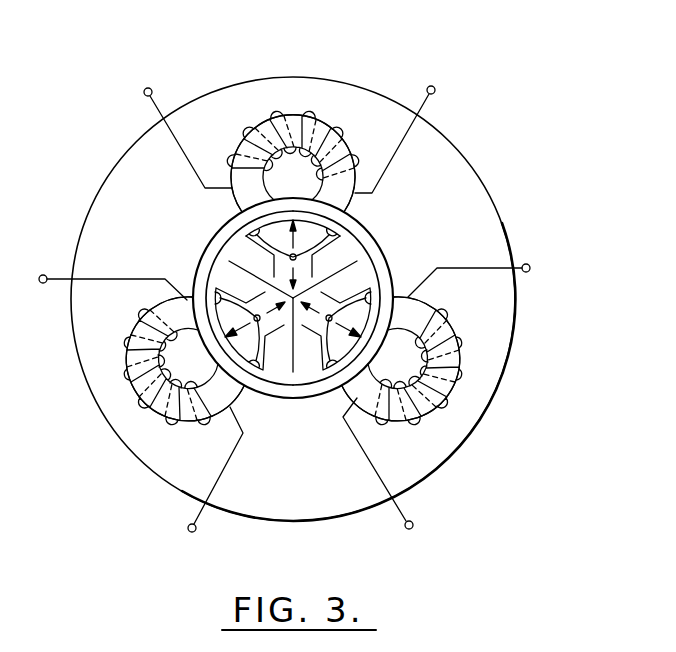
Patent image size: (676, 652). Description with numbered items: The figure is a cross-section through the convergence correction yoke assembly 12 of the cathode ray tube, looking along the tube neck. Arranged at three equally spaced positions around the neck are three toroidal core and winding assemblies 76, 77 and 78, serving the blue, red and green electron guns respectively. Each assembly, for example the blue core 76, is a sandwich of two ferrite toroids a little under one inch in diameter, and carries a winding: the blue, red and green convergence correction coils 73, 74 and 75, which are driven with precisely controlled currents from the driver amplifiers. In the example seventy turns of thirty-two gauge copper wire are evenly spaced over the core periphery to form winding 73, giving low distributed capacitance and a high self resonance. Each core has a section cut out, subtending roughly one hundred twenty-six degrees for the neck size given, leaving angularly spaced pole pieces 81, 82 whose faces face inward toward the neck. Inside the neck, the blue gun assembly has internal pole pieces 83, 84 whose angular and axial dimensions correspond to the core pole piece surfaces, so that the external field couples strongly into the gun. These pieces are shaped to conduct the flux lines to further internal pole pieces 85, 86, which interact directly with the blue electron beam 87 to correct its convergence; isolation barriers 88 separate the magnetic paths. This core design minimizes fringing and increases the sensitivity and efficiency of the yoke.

The convergence correction yoke assembly 12 is at (123, 158).
The blue convergence correction coil 73 is at (307, 113).
The red convergence correction coil 74 is at (140, 403).
The green convergence correction coil 75 is at (448, 410).
The blue toroidal core and winding assembly 76 is at (290, 113).
The red toroidal core and winding assembly 77 is at (125, 356).
The green toroidal core and winding assembly 78 is at (411, 428).
The pole piece 81 is at (237, 212).
The pole piece 82 is at (355, 206).
The internal pole piece 83 is at (262, 238).
The internal pole piece 84 is at (351, 222).
The internal pole piece 85 is at (258, 252).
The internal pole piece 86 is at (338, 243).
The blue electron beam 87 is at (244, 219).
The isolation barrier 88 is at (312, 268).